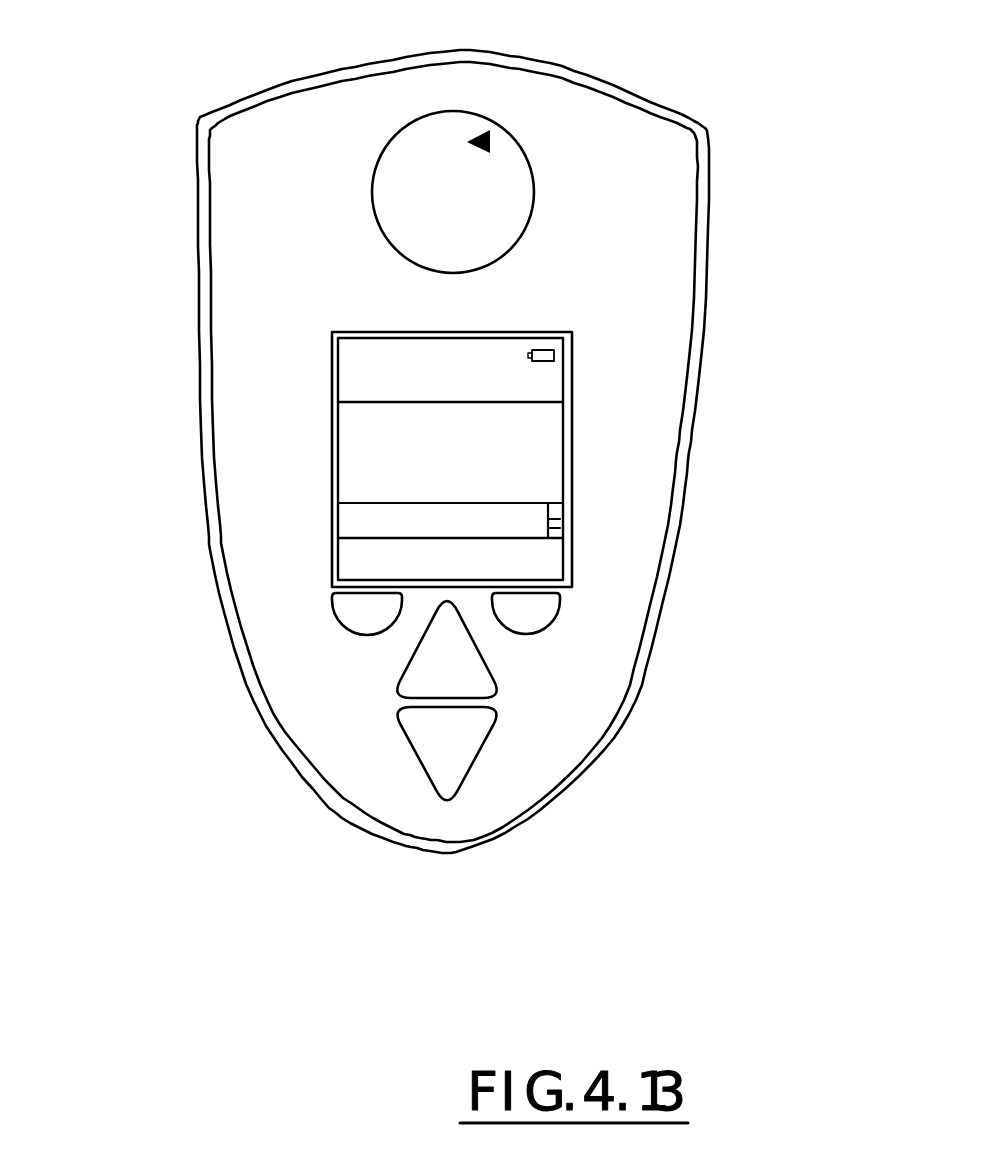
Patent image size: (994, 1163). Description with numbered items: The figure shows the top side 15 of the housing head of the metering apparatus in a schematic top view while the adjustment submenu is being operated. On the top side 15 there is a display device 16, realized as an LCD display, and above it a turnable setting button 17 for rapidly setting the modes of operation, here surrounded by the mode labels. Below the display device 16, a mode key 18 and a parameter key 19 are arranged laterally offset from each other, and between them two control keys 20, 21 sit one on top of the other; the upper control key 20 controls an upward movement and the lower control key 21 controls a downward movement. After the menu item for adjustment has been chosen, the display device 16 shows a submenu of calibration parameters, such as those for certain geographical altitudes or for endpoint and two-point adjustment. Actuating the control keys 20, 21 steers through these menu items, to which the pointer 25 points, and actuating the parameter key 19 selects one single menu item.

The top side 15 is at (374, 451).
The display device 16 is at (306, 459).
The setting button 17 is at (505, 155).
The mode key 18 is at (219, 602).
The parameter key 19 is at (664, 604).
The upper control key 20 is at (288, 649).
The lower control key 21 is at (297, 753).
The pointer 25 is at (704, 505).